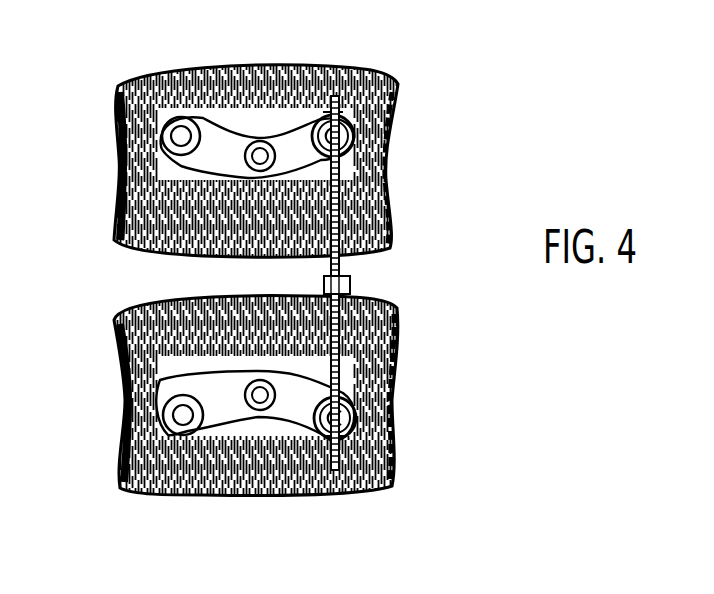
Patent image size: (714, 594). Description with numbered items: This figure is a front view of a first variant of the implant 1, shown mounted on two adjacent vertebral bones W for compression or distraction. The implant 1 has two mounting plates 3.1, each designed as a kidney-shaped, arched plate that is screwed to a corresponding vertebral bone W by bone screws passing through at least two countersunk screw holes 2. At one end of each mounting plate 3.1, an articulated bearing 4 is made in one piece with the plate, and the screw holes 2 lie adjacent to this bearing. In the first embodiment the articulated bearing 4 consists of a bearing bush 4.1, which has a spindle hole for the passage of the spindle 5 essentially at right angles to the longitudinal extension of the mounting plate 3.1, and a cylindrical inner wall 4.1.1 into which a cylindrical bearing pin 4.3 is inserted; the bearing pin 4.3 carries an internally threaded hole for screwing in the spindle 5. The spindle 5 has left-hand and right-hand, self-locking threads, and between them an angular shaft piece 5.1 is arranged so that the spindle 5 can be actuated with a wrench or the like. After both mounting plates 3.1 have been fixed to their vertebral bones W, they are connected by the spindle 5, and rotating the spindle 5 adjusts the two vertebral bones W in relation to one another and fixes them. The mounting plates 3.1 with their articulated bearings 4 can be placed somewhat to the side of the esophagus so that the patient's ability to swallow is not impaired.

The implant 1 is at (396, 292).
The screw holes 2 is at (208, 113).
The mounting plate 3.1 is at (192, 378).
The articulated bearing 4 is at (351, 73).
The bearing bush 4.1 is at (345, 132).
The cylindrical inner wall 4.1.1 is at (376, 117).
The bearing pin 4.3 is at (308, 524).
The spindle 5 is at (392, 222).
The angular shaft piece 5.1 is at (343, 278).
The vertebral bones W is at (113, 80).